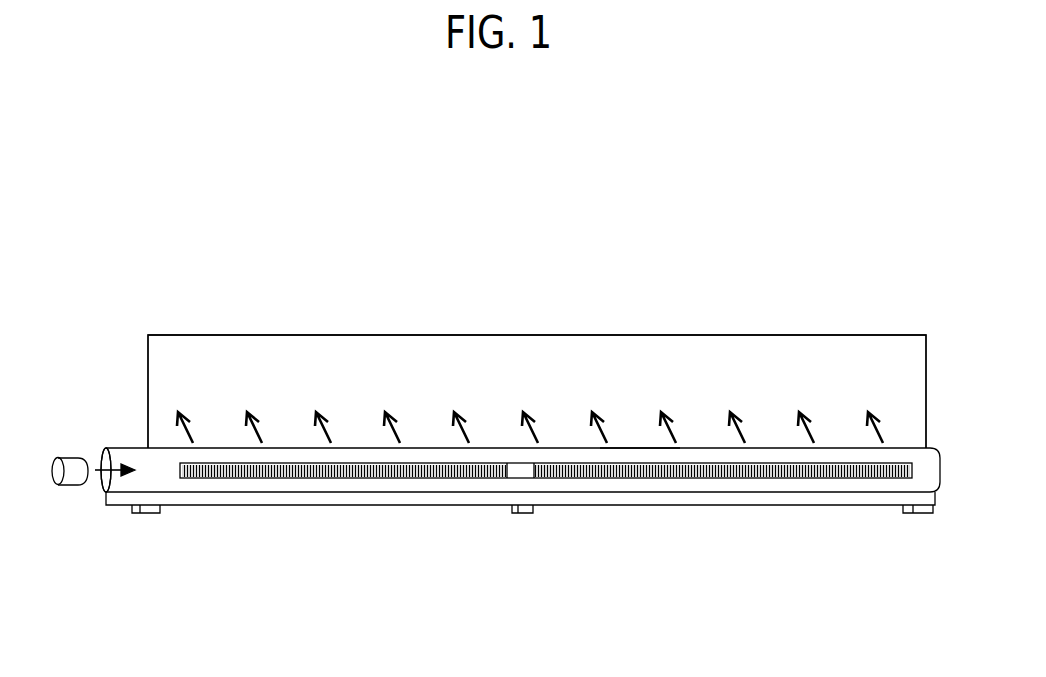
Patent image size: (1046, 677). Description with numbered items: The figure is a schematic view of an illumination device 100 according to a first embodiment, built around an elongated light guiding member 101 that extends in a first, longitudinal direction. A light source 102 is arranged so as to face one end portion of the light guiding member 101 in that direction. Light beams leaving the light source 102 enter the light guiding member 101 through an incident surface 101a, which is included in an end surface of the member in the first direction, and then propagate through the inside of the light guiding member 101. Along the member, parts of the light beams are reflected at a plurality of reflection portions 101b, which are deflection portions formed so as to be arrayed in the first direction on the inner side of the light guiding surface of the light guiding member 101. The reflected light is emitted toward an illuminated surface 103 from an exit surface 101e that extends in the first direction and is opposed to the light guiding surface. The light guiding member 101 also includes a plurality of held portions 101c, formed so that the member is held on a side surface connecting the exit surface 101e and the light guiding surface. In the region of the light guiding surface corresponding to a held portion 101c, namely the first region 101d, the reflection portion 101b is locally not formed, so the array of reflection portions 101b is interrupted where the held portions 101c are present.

The illumination device 100 is at (783, 305).
The light guiding member 101 is at (127, 447).
The incident surface 101a is at (105, 495).
The reflection portions 101b is at (352, 479).
The held portions 101c is at (152, 512).
The first region 101d is at (522, 471).
The exit surface 101e is at (638, 455).
The light source 102 is at (76, 482).
The illuminated surface 103 is at (157, 385).